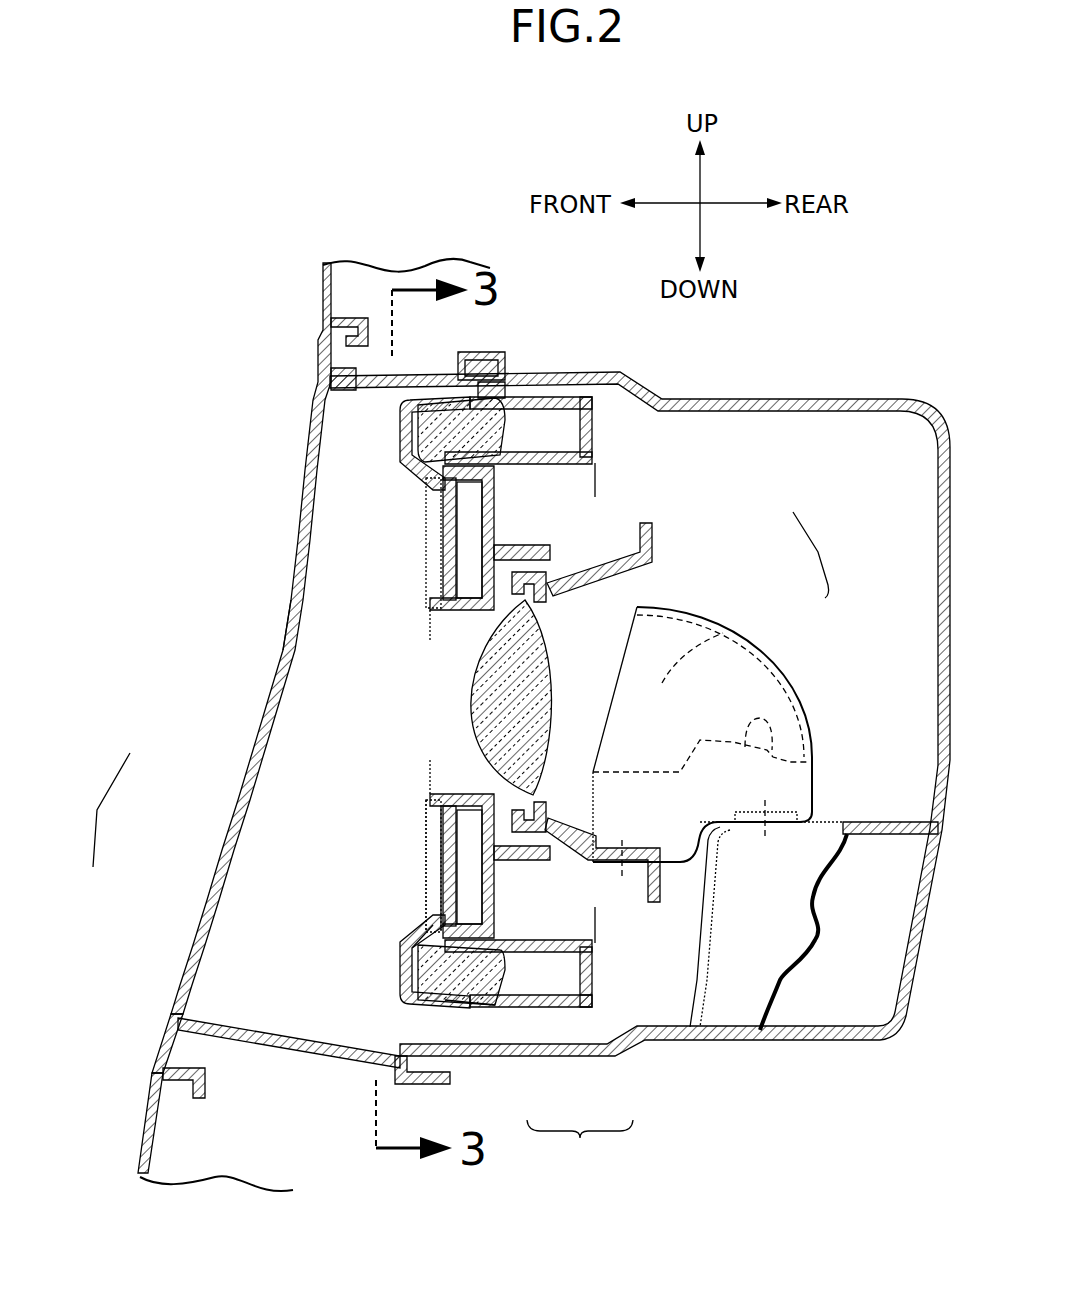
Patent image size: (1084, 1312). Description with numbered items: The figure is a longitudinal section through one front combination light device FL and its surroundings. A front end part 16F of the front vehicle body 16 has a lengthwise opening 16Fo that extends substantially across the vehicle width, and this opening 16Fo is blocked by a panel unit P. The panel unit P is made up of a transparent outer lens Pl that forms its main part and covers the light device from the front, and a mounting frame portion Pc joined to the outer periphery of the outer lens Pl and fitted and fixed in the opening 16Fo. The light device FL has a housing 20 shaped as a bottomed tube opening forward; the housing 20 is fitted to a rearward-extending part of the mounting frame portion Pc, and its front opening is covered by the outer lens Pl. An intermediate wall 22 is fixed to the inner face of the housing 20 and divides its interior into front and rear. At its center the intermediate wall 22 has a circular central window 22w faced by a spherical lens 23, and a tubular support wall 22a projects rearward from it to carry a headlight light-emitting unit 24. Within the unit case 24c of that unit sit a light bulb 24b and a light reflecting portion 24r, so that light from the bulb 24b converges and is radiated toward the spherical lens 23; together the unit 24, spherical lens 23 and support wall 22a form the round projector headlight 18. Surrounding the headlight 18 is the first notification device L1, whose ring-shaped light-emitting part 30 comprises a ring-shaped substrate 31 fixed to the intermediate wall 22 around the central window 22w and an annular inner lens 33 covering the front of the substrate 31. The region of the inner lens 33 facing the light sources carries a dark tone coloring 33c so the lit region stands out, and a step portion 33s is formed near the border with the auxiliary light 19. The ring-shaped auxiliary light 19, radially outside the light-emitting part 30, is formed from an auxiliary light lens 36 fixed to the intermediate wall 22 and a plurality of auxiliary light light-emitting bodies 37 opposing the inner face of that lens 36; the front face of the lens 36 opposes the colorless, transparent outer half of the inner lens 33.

The front vehicle body 16 is at (318, 296).
The front end part 16F is at (142, 1117).
The lengthwise opening 16Fo is at (195, 1062).
The headlight 18 is at (824, 555).
The auxiliary light 19 is at (580, 1143).
The housing 20 is at (805, 402).
The intermediate wall 22 is at (500, 507).
The tubular support wall 22a is at (608, 868).
The central window 22w is at (436, 770).
The spherical lens 23 is at (538, 650).
The headlight light-emitting unit 24 is at (776, 652).
The light bulb 24b is at (762, 720).
The unit case 24c is at (788, 781).
The light reflecting portion 24r is at (680, 673).
The ring-shaped light-emitting part 30 is at (445, 542).
The ring-shaped substrate 31 is at (474, 592).
The annular inner lens 33 is at (388, 976).
The dark tone coloring 33c is at (428, 840).
The step portion 33s is at (416, 950).
The auxiliary light lens 36 is at (497, 985).
The auxiliary light light-emitting bodies 37 is at (597, 978).
The front combination light device FL is at (692, 1092).
The first notification device L1 is at (416, 878).
The panel unit P is at (103, 810).
The outer lens Pl is at (280, 710).
The mounting frame portion Pc is at (320, 356).